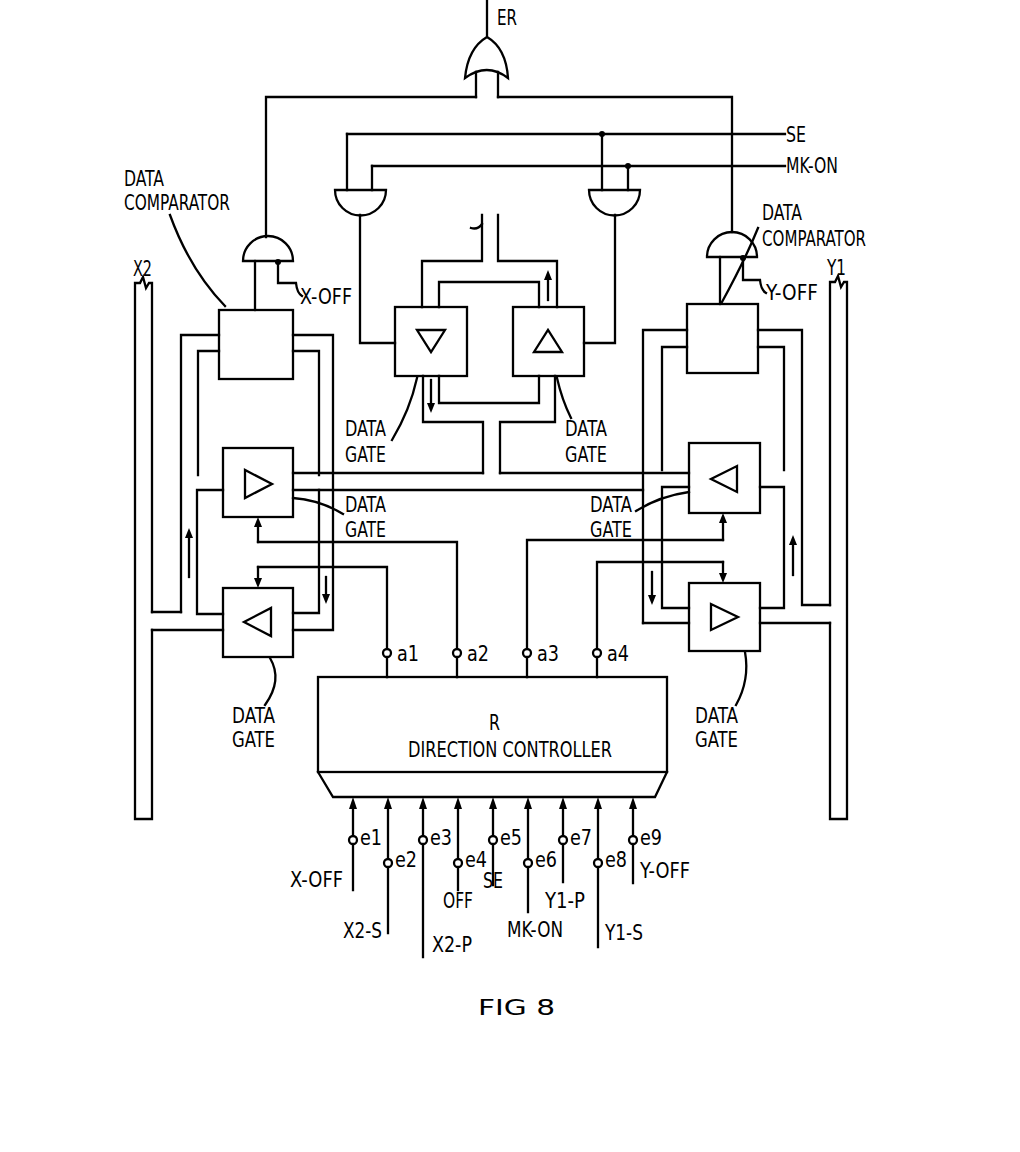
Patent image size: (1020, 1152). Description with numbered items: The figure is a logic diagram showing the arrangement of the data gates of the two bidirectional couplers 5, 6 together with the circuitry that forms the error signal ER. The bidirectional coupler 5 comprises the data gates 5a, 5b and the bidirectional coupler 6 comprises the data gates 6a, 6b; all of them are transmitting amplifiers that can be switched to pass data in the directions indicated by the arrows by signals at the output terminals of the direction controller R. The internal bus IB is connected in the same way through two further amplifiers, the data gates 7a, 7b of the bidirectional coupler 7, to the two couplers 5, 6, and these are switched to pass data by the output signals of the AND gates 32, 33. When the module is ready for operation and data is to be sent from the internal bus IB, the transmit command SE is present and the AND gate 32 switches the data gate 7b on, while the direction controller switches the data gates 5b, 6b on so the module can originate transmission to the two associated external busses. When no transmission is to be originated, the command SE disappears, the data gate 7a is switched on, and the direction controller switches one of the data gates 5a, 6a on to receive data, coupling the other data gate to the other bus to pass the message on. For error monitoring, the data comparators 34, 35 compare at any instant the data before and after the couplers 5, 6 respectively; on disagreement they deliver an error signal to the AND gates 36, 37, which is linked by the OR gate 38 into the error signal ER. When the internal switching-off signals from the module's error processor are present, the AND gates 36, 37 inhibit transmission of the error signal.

The OR gate 38 is at (506, 58).
The AND gate 32 is at (386, 203).
The AND gate 33 is at (640, 203).
The AND gate 36 is at (243, 241).
The AND gate 37 is at (707, 237).
The data comparator 34 is at (273, 379).
The data comparator 35 is at (715, 373).
The bidirectional coupler 7 is at (489, 341).
The data gate 7a is at (565, 378).
The data gate 7b is at (406, 378).
The bidirectional coupler 5 is at (257, 502).
The data gate 5a is at (253, 448).
The data gate 5b is at (240, 658).
The bidirectional coupler 6 is at (736, 497).
The data gate 6a is at (727, 443).
The data gate 6b is at (762, 652).
The internal bus IB is at (498, 226).